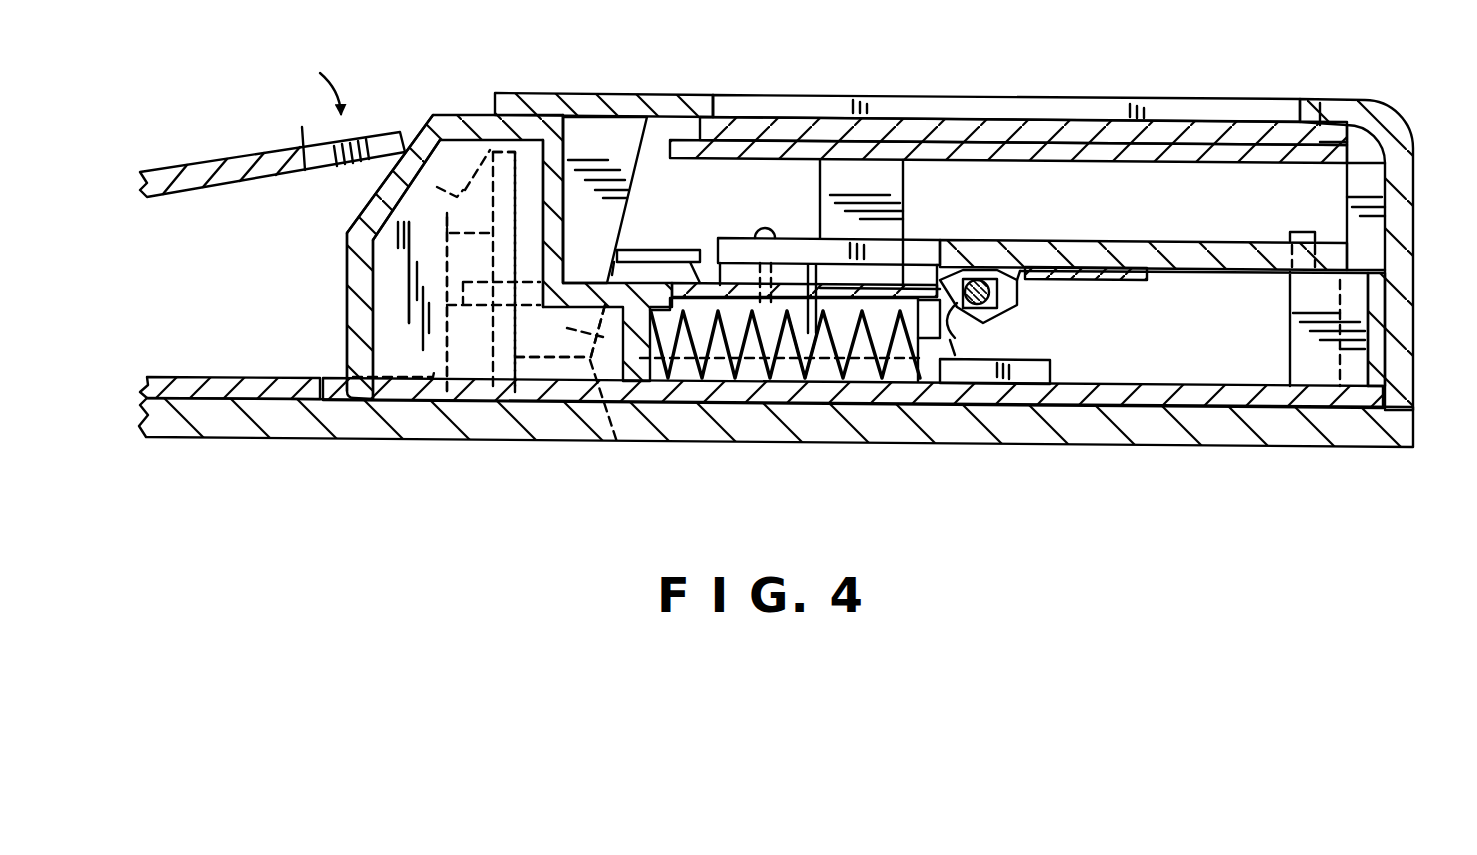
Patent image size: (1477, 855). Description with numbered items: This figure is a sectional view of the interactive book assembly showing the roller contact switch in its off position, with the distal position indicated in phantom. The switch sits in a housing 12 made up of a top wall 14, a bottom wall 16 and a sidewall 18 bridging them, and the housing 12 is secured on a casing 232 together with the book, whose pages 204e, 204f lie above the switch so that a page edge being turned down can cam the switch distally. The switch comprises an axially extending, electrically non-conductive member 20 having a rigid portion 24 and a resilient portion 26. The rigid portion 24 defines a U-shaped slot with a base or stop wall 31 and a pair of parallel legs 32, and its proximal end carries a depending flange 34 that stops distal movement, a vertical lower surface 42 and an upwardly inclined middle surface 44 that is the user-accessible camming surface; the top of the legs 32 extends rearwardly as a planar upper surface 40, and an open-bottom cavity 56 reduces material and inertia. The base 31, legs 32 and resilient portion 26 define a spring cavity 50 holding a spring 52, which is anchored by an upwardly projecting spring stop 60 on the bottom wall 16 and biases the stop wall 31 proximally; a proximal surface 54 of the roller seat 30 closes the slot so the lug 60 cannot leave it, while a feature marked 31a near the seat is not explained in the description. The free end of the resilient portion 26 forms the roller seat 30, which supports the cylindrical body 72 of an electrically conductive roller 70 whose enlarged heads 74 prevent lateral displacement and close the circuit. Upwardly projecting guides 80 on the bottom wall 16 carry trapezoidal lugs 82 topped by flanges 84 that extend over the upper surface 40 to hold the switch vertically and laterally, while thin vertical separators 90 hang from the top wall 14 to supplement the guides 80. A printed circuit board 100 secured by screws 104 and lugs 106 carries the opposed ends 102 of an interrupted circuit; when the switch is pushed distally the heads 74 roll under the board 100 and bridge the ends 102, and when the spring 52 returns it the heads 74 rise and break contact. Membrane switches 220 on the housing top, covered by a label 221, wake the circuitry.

The housing 12 is at (697, 88).
The top wall 14 is at (563, 105).
The bottom wall 16 is at (1063, 400).
The sidewall 18 is at (1430, 330).
The non-conductive member 20 is at (466, 92).
The rigid portion 24 is at (338, 247).
The resilient portion 26 is at (717, 282).
The roller seat 30 is at (990, 270).
The base 31 is at (680, 382).
The spring seat 31a is at (973, 332).
The legs 32 is at (757, 382).
The depending flange 34 is at (463, 392).
The upper surface 40 is at (583, 280).
The lower surface 42 is at (350, 310).
The inclined middle surface 44 is at (377, 182).
The spring cavity 50 is at (848, 312).
The spring 52 is at (830, 384).
The proximal surface 54 is at (955, 335).
The cavity 56 is at (407, 323).
The spring stop 60 is at (938, 340).
The roller 70 is at (1017, 307).
The cylindrical body 72 is at (977, 270).
The enlarged heads 74 is at (983, 270).
The guides 80 is at (1053, 368).
The lug 82 is at (603, 337).
The flange 84 is at (653, 250).
The vertical separators 90 is at (620, 153).
The printed circuit board 100 is at (1193, 253).
The opposed ends 102 is at (1132, 272).
The screws 104 is at (767, 227).
The lugs 106 is at (1293, 235).
The page 204e is at (187, 197).
The page 204f is at (193, 352).
The membrane switches 220 is at (847, 155).
The label 221 is at (1127, 128).
The casing 232 is at (218, 423).